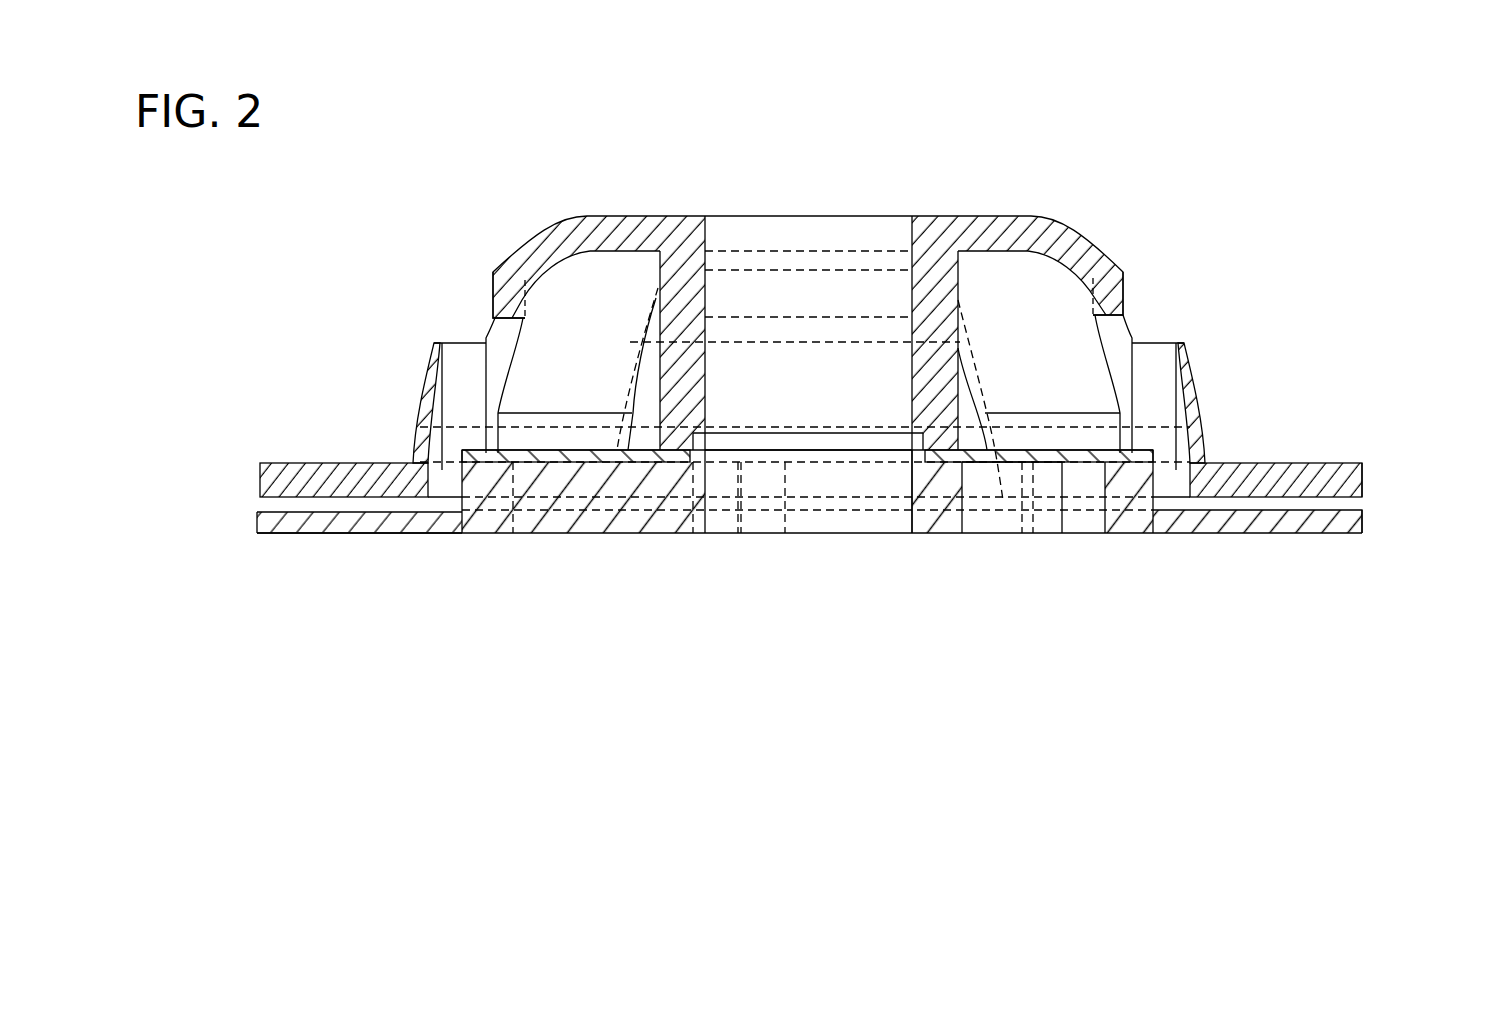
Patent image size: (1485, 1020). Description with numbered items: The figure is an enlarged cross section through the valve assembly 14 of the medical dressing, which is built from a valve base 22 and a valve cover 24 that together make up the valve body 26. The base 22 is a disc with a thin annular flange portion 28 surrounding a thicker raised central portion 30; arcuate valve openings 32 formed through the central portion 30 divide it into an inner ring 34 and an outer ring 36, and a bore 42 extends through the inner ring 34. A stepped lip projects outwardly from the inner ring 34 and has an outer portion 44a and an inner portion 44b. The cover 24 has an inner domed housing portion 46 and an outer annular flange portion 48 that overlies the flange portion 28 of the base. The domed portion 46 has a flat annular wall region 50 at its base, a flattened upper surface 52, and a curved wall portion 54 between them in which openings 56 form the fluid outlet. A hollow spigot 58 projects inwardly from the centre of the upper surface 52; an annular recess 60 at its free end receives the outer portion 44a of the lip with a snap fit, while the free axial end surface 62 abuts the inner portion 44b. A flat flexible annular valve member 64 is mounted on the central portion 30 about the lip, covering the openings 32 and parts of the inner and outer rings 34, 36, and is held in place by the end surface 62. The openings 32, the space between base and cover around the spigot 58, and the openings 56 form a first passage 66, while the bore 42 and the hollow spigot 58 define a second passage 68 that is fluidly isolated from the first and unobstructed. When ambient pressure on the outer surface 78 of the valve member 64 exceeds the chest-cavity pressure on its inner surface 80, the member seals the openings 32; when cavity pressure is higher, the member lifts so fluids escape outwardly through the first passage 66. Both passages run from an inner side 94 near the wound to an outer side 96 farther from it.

The valve assembly 14 is at (1232, 212).
The valve base 22 is at (448, 533).
The valve cover 24 is at (562, 226).
The valve body 26 is at (1362, 523).
The annular flange portion 28 is at (255, 522).
The central portion 30 is at (595, 490).
The arcuate valve openings 32 is at (1103, 515).
The inner ring 34 is at (942, 490).
The outer ring 36 is at (1140, 490).
The bore 42 is at (910, 502).
The outer portion of the stepped lip 44a is at (700, 443).
The inner portion of the stepped lip 44b is at (720, 458).
The domed housing portion 46 is at (1102, 243).
The annular flange portion 48 is at (260, 477).
The flat annular wall region 50 is at (422, 443).
The flattened upper surface 52 is at (993, 217).
The curved wall portion 54 is at (438, 352).
The openings 56 is at (492, 327).
The hollow spigot 58 is at (707, 297).
The annular recess 60 is at (913, 447).
The free axial end surface 62 is at (983, 447).
The valve member 64 is at (1152, 450).
The first passage 66 is at (588, 380).
The second passage 68 is at (912, 265).
The outer surface of the valve member 78 is at (1050, 450).
The inner surface of the valve member 80 is at (1022, 470).
The inner side 94 is at (353, 535).
The outer side 96 is at (510, 255).